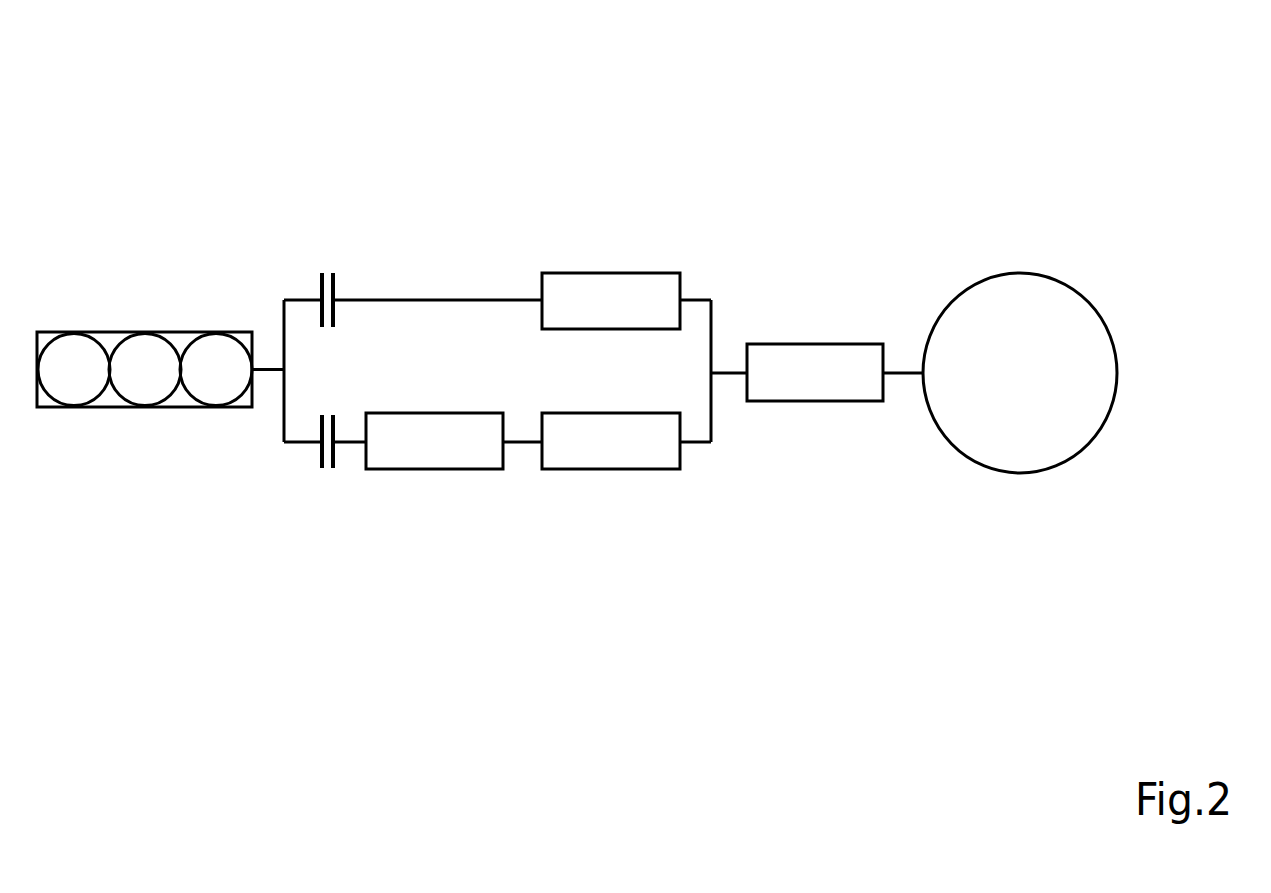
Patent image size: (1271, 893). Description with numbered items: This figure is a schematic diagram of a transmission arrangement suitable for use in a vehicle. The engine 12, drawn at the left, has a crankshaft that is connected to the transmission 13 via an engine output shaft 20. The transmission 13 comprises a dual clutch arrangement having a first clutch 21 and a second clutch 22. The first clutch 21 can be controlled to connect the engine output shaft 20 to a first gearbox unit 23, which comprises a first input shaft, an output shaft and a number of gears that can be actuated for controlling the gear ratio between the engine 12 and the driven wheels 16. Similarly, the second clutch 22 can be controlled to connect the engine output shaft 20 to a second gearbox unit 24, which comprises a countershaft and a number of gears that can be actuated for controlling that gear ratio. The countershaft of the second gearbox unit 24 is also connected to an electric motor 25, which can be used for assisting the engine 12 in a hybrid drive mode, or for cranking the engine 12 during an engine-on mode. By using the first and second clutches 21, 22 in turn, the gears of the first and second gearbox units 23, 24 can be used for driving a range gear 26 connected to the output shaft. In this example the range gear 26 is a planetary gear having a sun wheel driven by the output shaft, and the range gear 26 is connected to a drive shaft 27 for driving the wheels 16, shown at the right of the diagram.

The engine 12 is at (108, 407).
The transmission 13 is at (580, 149).
The driven wheels 16 is at (1013, 273).
The engine output shaft 20 is at (267, 372).
The first clutch 21 is at (307, 197).
The second clutch 22 is at (316, 537).
The first gearbox unit 23 is at (640, 273).
The second gearbox unit 24 is at (607, 470).
The electric motor 25 is at (450, 470).
The range gear 26 is at (819, 401).
The drive shaft 27 is at (901, 373).